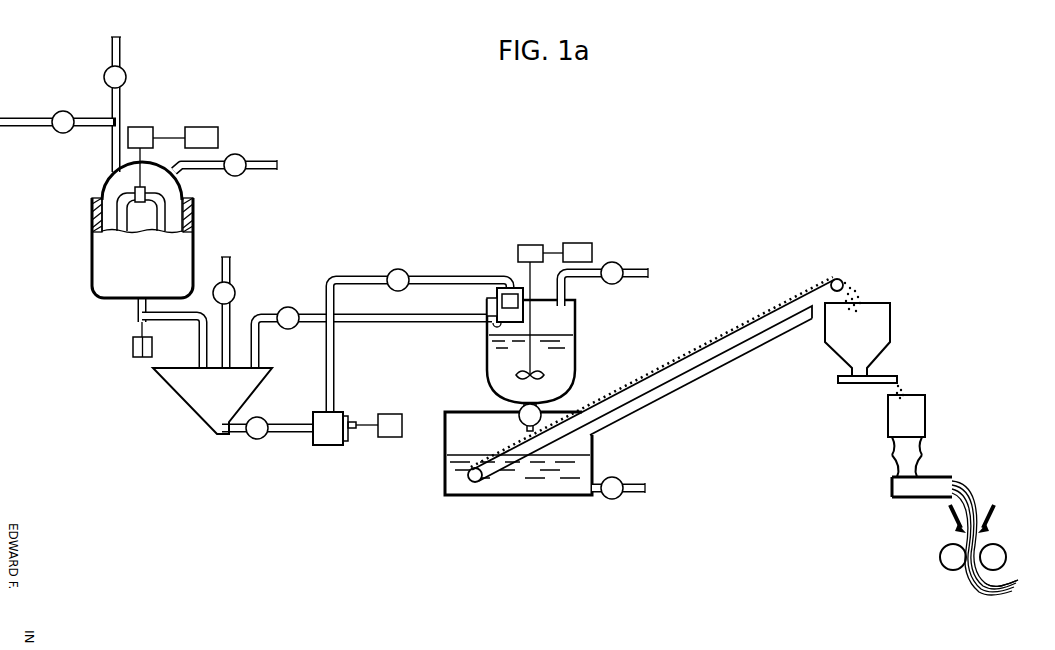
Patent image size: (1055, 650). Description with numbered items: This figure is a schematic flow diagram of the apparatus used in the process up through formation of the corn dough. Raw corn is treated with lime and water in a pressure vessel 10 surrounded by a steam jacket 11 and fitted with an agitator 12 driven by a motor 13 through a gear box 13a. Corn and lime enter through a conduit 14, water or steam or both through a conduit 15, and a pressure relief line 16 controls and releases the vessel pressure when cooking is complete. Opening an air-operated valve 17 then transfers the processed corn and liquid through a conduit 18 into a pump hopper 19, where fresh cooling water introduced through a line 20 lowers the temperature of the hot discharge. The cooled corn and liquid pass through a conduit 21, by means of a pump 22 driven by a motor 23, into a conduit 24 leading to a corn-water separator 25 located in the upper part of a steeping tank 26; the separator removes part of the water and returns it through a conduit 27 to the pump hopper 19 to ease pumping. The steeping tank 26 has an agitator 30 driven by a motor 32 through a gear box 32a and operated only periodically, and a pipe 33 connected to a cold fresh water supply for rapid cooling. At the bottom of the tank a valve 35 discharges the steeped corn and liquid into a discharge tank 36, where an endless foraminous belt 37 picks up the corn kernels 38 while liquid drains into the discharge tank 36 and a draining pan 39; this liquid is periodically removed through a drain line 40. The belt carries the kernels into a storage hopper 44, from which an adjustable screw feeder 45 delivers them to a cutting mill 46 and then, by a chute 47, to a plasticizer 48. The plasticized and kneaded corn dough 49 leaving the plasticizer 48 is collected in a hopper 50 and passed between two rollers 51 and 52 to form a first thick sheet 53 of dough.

The pressure vessel 10 is at (103, 262).
The steam jacket 11 is at (92, 213).
The agitator 12 is at (134, 190).
The motor 13 is at (201, 126).
The gear box 13a is at (140, 126).
The conduit 14 is at (263, 160).
The conduit 15 is at (11, 126).
The pressure relief line 16 is at (122, 43).
The air-operated valve 17 is at (133, 347).
The conduit 18 is at (166, 320).
The pump hopper 19 is at (228, 402).
The line 20 is at (231, 264).
The conduit 21 is at (277, 432).
The pump 22 is at (330, 446).
The motor 23 is at (390, 438).
The conduit 24 is at (334, 370).
The corn-water separator 25 is at (487, 328).
The steeping tank 26 is at (567, 367).
The conduit 27 is at (378, 322).
The agitator 30 is at (506, 359).
The motor 32 is at (577, 243).
The gear box 32a is at (530, 245).
The conduit 33 is at (636, 270).
The valve 35 is at (519, 418).
The discharge tank 36 is at (522, 488).
The endless foraminous belt 37 is at (712, 360).
The corn kernels 38 is at (681, 357).
The draining pan 39 is at (676, 389).
The drain line 40 is at (633, 487).
The storage hopper 44 is at (868, 336).
The adjustable screw feeder 45 is at (895, 375).
The cutting mill 46 is at (906, 416).
The chute 47 is at (892, 448).
The plasticizer 48 is at (895, 462).
The corn dough 49 is at (970, 493).
The hopper 50 is at (996, 512).
The roller 51 is at (998, 553).
The roller 52 is at (950, 552).
The thick sheet 53 is at (980, 582).